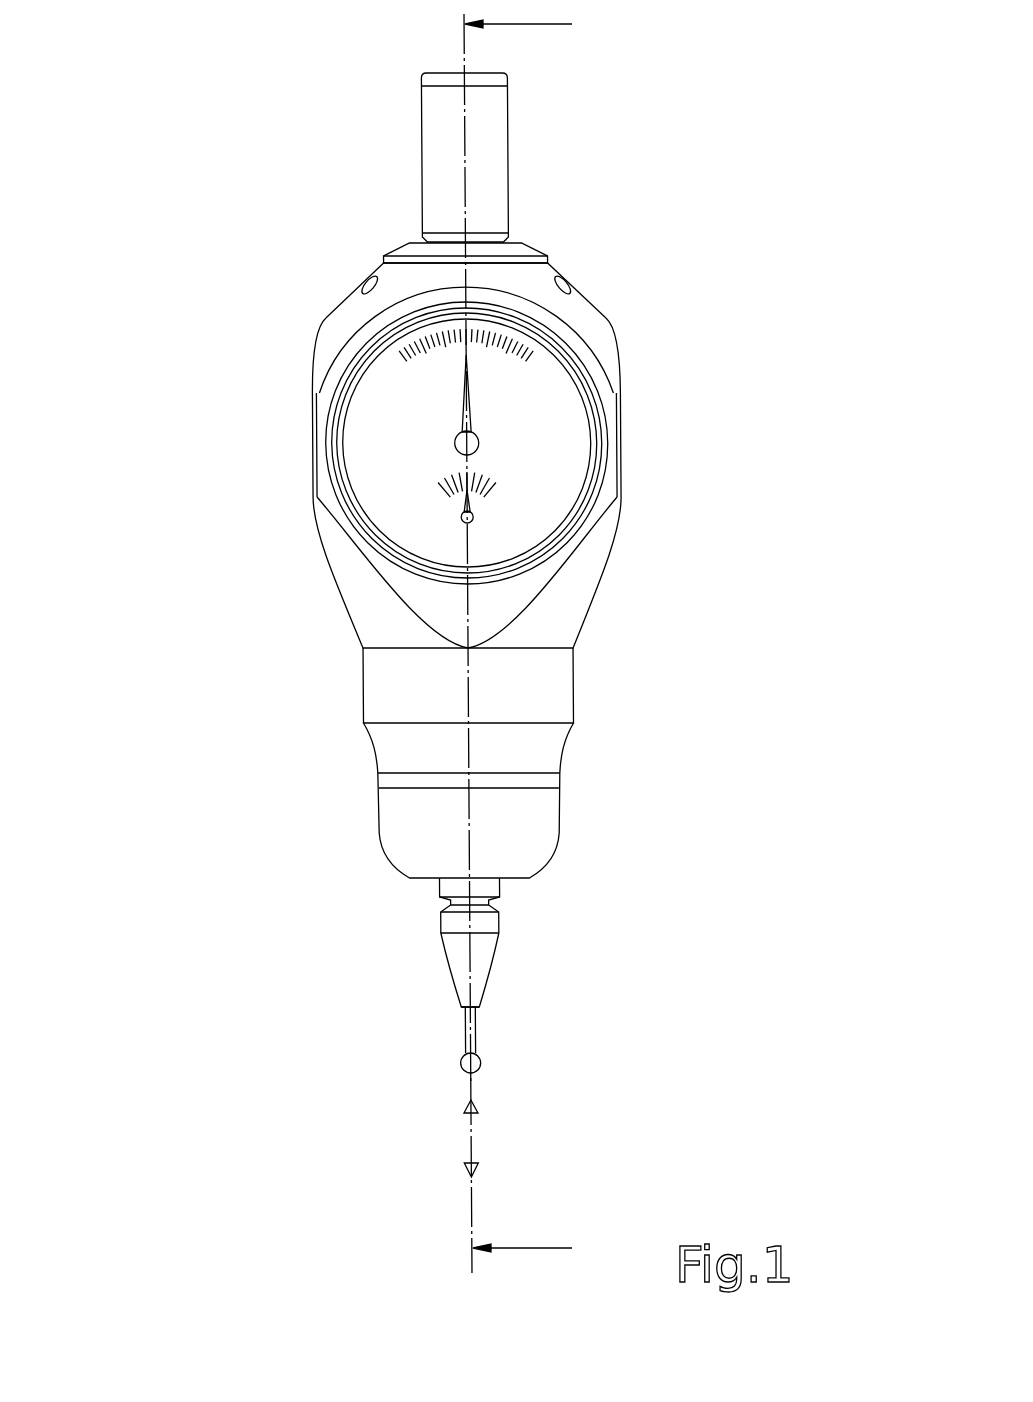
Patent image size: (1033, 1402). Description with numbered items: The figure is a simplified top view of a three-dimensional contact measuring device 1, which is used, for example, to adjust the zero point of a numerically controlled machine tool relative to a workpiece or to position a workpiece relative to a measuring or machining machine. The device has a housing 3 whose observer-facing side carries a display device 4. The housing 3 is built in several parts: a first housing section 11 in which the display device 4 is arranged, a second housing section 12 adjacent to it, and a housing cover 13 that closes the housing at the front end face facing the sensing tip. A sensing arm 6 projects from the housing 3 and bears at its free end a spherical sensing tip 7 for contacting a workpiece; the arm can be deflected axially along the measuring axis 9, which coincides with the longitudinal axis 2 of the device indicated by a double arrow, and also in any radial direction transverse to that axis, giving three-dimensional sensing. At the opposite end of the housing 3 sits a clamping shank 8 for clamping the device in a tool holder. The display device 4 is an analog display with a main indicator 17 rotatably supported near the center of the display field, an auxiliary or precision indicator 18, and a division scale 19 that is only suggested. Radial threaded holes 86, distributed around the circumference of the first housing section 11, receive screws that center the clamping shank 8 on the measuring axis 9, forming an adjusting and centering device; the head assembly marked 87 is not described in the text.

The 3D contact measuring device 1 is at (278, 108).
The longitudinal axis 2 is at (470, 1136).
The housing 3 is at (320, 325).
The display device 4 is at (555, 433).
The sensing arm 6 is at (545, 886).
The spherical sensing tip 7 is at (462, 1062).
The clamping shank 8 is at (422, 148).
The measuring axis 9 is at (475, 1078).
The first housing section 11 is at (352, 573).
The second housing section 12 is at (393, 707).
The housing cover 13 is at (418, 826).
The main indicator 17 is at (458, 437).
The auxiliary or precision indicator 18 is at (476, 515).
The division scale 19 is at (540, 313).
The radial threaded holes 86 is at (366, 281).
The display head 87 is at (573, 225).